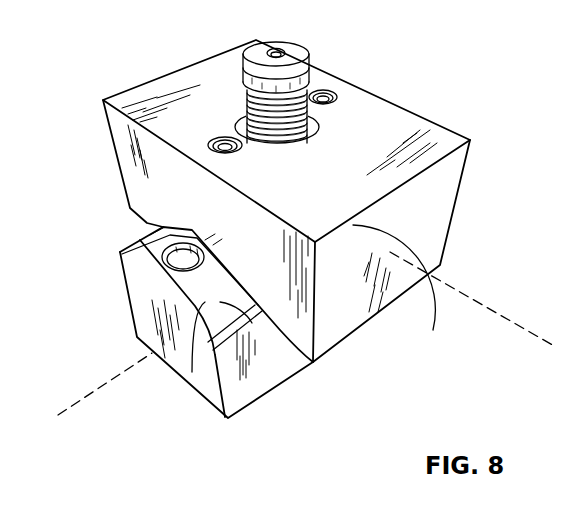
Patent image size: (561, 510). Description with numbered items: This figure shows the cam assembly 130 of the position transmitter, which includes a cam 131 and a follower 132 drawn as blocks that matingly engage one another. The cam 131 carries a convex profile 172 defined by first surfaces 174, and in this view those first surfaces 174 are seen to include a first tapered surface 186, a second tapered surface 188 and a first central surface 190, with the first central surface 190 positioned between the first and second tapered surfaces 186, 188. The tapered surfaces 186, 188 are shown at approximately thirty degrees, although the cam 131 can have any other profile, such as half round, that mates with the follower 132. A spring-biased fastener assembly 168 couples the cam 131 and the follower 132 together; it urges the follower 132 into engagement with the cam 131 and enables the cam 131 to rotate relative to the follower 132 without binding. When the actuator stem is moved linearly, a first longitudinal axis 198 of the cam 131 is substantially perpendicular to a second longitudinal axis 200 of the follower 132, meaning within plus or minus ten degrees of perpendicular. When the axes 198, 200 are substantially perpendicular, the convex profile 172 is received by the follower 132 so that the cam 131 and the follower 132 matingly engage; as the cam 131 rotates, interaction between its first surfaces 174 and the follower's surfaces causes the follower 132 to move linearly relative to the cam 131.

The cam assembly 130 is at (160, 205).
The spring-biased fastener assembly 168 is at (336, 69).
The cam 131 is at (228, 383).
The second tapered surface 188 is at (135, 251).
The convex profile 172 is at (283, 338).
The first surfaces 174 is at (314, 356).
The first tapered surface 186 is at (192, 372).
The first central surface 190 is at (207, 250).
The follower 132 is at (404, 295).
The first longitudinal axis 198 is at (87, 394).
The second longitudinal axis 200 is at (484, 310).